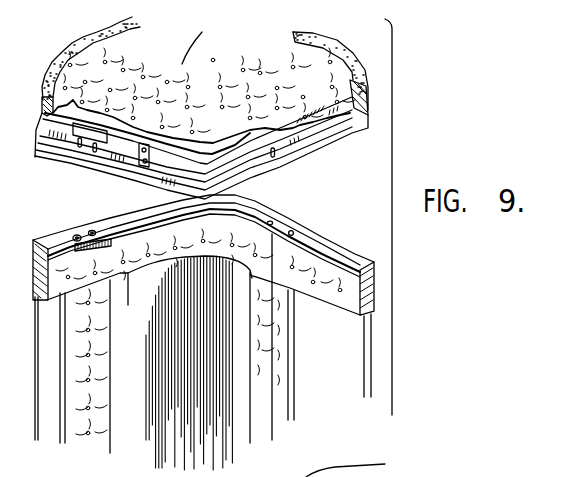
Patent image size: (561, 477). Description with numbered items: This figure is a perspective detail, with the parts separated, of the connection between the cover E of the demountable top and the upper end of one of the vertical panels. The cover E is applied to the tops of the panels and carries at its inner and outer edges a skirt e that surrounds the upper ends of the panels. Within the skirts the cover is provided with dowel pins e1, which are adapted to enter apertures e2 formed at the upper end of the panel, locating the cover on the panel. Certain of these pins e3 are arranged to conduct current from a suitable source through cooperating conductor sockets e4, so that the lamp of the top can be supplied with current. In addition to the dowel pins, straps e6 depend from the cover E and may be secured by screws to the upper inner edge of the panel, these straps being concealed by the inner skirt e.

The cover E is at (205, 78).
The skirt e is at (312, 133).
The dowel pin e1 is at (275, 158).
The aperture e2 is at (293, 230).
The current-conducting pin e3 is at (96, 153).
The conductor socket e4 is at (88, 230).
The strap e6 is at (143, 168).